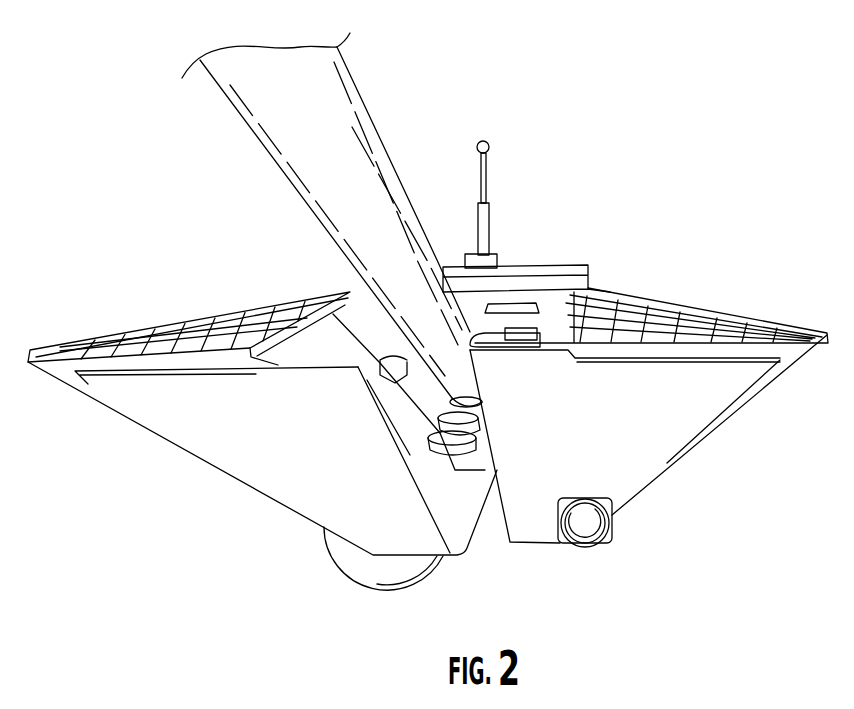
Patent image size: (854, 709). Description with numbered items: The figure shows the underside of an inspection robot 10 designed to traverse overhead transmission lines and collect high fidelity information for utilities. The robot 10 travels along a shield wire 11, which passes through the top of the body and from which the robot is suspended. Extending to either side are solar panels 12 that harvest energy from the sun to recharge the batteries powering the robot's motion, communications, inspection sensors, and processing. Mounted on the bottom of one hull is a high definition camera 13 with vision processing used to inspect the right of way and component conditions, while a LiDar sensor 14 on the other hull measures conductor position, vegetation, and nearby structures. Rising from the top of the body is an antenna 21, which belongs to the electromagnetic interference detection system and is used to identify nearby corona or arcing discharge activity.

The inspection robot 10 is at (671, 232).
The shield wire 11 is at (268, 113).
The solar panels 12 is at (223, 332).
The high definition camera 13 is at (590, 527).
The LiDar sensor 14 is at (342, 555).
The antenna 21 is at (483, 189).